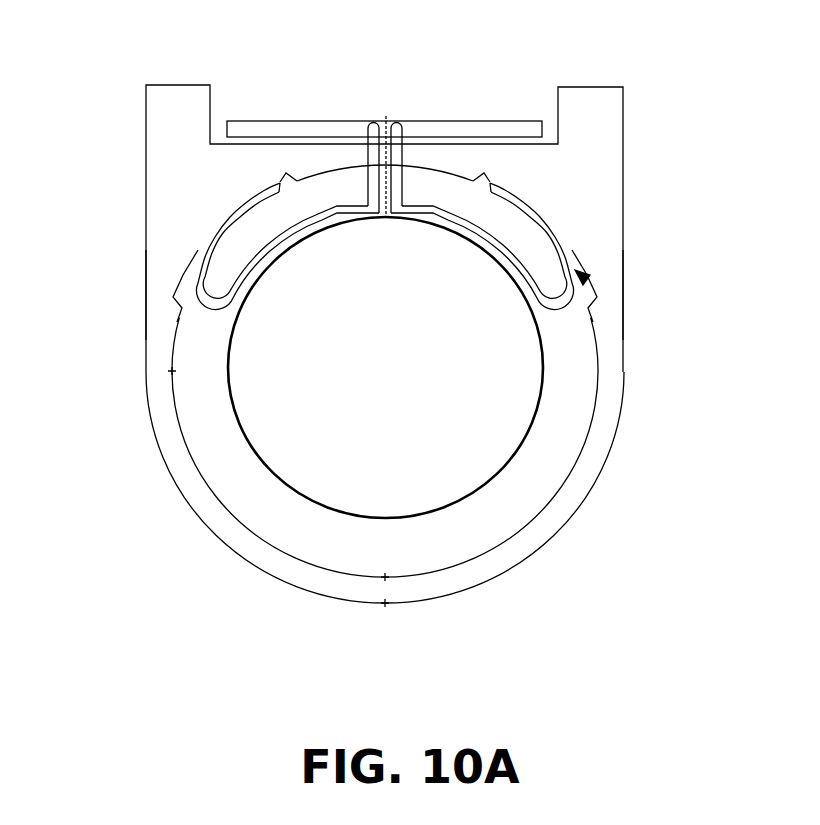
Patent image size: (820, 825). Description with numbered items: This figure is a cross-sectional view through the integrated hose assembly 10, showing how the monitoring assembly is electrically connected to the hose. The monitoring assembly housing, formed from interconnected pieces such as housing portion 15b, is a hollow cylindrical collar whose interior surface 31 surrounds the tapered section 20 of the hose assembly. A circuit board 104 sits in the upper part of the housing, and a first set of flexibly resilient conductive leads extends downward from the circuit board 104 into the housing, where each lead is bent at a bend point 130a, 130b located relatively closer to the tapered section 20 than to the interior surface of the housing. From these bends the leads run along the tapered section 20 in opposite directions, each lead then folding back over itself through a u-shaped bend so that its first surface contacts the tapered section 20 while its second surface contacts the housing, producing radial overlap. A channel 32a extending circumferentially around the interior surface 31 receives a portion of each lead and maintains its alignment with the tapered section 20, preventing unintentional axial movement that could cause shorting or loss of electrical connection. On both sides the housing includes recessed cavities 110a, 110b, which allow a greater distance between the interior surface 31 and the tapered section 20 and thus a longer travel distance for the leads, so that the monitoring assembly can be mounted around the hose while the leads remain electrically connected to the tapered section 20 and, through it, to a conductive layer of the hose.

The integrated hose assembly 10 is at (416, 364).
The housing portion 15b is at (598, 87).
The tapered section 20 is at (528, 442).
The interior surface 31 is at (597, 400).
The channel 32a is at (497, 490).
The circuit board 104 is at (525, 120).
The recessed cavity 110a is at (183, 283).
The recessed cavity 110b is at (595, 292).
The bend point 130a is at (363, 198).
The bend point 130b is at (410, 202).